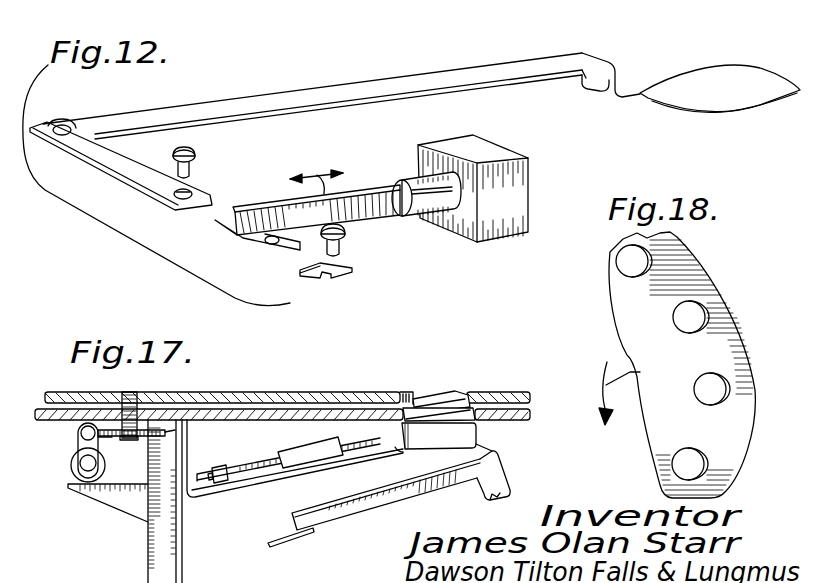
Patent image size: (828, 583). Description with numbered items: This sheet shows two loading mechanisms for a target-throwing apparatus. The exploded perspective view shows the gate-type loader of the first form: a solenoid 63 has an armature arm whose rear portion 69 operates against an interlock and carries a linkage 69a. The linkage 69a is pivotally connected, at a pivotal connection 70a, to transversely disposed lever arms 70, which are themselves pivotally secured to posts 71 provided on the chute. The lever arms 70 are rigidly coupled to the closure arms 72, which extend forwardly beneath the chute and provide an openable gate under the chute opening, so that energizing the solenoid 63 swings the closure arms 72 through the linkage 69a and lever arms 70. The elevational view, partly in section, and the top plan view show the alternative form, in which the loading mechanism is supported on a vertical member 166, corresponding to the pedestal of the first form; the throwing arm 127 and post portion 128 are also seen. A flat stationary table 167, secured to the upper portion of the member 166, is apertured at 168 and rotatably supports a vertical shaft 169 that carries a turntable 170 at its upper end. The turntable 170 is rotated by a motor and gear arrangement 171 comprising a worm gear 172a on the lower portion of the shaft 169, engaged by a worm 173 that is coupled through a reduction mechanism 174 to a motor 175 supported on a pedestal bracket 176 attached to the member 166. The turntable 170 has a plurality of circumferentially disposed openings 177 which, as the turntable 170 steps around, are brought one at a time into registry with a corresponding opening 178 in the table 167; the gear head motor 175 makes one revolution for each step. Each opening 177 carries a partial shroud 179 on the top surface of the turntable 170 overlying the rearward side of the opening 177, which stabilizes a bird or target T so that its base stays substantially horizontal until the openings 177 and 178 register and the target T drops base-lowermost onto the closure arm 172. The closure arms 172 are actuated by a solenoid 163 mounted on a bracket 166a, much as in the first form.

In FIG. 12, the solenoid 63 is at (494, 152).
In FIG. 12, the rear portion of the armature arm 69 is at (430, 182).
In FIG. 12, the linkage 69a is at (376, 192).
In FIG. 12, the lever arms 70 is at (117, 167).
In FIG. 12, the pivotal connection 70a is at (198, 161).
In FIG. 12, the posts 71 is at (63, 123).
In FIG. 12, the closure arms 72 is at (453, 78).
In FIG. 17, the throwing arm 127 is at (347, 510).
In FIG. 17, the post portion 128 is at (503, 484).
In FIG. 17, the solenoid 163 is at (290, 453).
In FIG. 17, the vertical member 166 is at (160, 548).
In FIG. 17, the bracket 166a is at (246, 490).
In FIG. 17, the flat stationary table 167 is at (495, 443).
In FIG. 17, the aperture 168 is at (150, 412).
In FIG. 17, the vertical shaft 169 is at (132, 393).
In FIG. 17, the turntable 170 is at (522, 392).
In FIG. 18, the turntable 170 is at (690, 272).
In FIG. 17, the motor and gear arrangement 171 is at (70, 465).
In FIG. 17, the closure arms 172 is at (497, 447).
In FIG. 17, the worm gear 172a is at (167, 432).
In FIG. 17, the worm 173 is at (77, 438).
In FIG. 17, the reduction mechanism 174 is at (72, 450).
In FIG. 17, the motor 175 is at (105, 463).
In FIG. 17, the pedestal bracket 176 is at (127, 497).
In FIG. 18, the openings 177 is at (623, 258).
In FIG. 17, the opening 178 is at (393, 425).
In FIG. 17, the partial shroud 179 is at (466, 396).
In FIG. 18, the partial shroud 179 is at (698, 317).
In FIG. 17, the target T is at (432, 399).